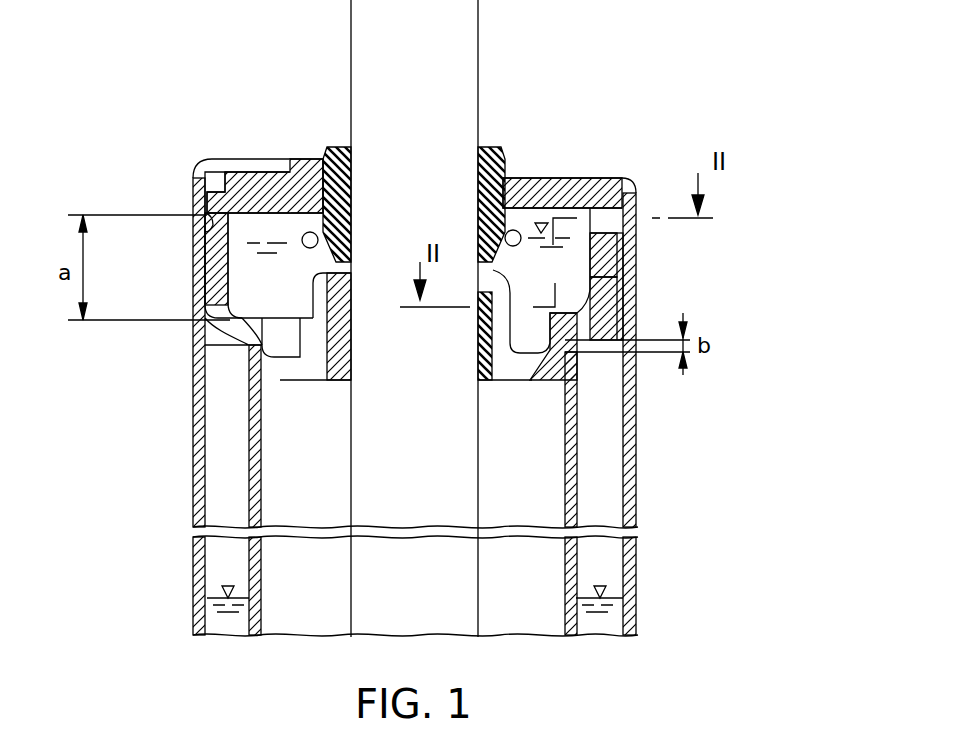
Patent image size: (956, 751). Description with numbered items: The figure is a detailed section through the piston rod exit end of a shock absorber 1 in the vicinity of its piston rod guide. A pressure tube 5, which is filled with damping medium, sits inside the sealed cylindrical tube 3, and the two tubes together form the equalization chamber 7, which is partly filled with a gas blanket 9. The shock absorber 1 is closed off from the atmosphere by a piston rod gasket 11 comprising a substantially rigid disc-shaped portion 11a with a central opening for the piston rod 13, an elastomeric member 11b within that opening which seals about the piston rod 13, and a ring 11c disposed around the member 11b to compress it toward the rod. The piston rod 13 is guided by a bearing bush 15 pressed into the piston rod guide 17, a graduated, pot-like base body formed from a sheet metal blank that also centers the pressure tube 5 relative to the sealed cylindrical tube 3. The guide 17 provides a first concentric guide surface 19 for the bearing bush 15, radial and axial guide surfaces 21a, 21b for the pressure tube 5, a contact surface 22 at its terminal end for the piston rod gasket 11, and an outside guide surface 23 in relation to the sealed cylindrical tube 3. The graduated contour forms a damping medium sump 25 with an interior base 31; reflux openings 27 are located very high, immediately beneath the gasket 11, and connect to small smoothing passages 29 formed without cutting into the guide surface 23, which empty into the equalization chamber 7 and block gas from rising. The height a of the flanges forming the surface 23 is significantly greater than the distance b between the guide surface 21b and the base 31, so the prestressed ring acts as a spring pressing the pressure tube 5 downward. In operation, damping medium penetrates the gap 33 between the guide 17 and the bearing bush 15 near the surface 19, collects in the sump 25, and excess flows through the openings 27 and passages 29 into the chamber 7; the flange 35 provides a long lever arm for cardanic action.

The shock absorber 1 is at (90, 440).
The sealed cylindrical tube 3 is at (632, 468).
The pressure tube 5 is at (565, 503).
The equalization chamber 7 is at (215, 482).
The gas blanket 9 is at (612, 330).
The piston rod gasket 11 is at (538, 148).
The rigid disc-shaped portion 11a is at (582, 178).
The elastomeric member 11b is at (502, 147).
The ring 11c is at (310, 232).
The piston rod 13 is at (457, 53).
The bearing bush 15 is at (340, 377).
The piston rod guide 17 is at (517, 380).
The first concentric guide surface 19 is at (305, 377).
The radial guide surface 21a is at (247, 370).
The axial guide surface 21b is at (250, 345).
The contact surface 22 is at (193, 217).
The guide surface 23 is at (193, 275).
The damping medium sump 25 is at (600, 253).
The reflux openings 27 is at (603, 178).
The smoothing passages 29 is at (600, 290).
The interior base 31 is at (283, 325).
The gap 33 is at (475, 380).
The flange 35 is at (313, 280).